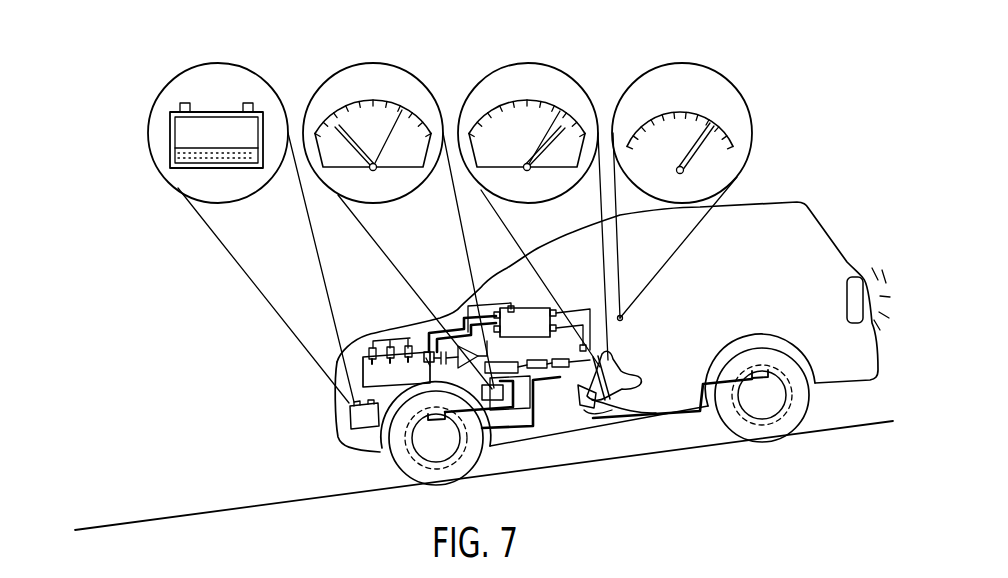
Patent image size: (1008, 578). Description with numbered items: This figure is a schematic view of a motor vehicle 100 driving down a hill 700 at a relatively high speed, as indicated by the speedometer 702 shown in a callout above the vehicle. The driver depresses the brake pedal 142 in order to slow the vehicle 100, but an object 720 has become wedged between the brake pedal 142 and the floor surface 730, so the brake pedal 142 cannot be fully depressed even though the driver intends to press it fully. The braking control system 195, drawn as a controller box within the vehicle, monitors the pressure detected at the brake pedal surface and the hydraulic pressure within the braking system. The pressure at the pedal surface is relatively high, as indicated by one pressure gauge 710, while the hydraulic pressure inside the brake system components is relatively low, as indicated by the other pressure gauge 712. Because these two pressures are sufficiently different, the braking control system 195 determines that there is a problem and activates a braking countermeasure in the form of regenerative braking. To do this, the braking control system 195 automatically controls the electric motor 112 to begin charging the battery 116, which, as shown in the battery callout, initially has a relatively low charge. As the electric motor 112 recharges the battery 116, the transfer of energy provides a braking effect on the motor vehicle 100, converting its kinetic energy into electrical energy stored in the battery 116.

The motor vehicle 100 is at (787, 197).
The electric motor 112 is at (425, 355).
The battery 116 is at (168, 138).
The brake pedal 142 is at (576, 398).
The braking control system 195 is at (528, 282).
The hill 700 is at (167, 518).
The speedometer 702 is at (716, 124).
The pressure gauge 710 is at (526, 166).
The pressure gauge 712 is at (371, 165).
The object 720 is at (595, 401).
The floor surface 730 is at (646, 412).